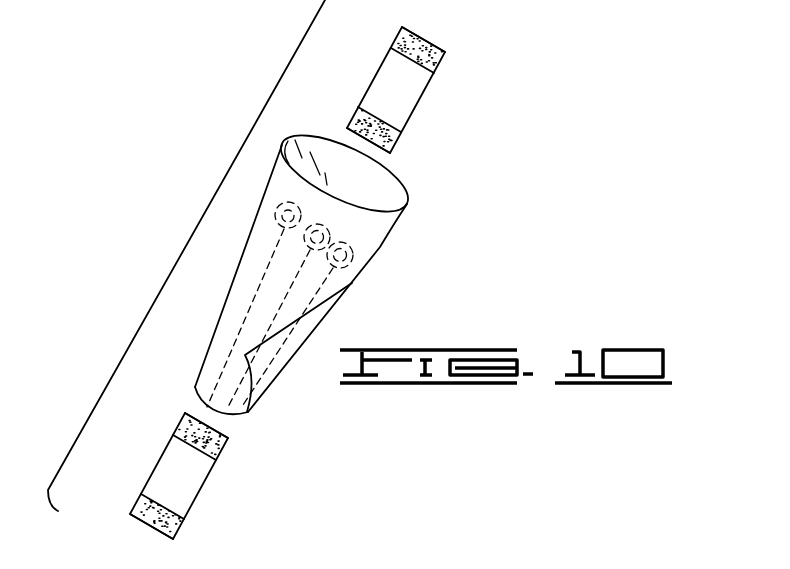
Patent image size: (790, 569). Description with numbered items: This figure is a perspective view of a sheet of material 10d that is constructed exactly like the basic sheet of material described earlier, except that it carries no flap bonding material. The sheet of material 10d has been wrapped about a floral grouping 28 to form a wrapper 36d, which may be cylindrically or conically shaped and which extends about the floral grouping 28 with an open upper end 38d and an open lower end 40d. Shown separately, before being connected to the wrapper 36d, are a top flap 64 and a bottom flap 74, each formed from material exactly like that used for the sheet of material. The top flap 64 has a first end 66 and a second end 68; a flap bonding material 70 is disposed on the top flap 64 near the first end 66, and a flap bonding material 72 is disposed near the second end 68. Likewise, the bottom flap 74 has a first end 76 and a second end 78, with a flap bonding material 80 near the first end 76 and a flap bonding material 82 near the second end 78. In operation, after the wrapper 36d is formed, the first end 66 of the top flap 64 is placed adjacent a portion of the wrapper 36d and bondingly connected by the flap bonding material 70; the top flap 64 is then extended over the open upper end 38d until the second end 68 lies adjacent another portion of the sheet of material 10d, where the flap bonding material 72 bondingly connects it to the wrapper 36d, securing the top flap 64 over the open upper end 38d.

The sheet of material 10d is at (368, 252).
The floral grouping 28 is at (262, 283).
The wrapper 36d is at (346, 292).
The open upper end 38d is at (373, 218).
The open lower end 40d is at (220, 413).
The top flap 64 is at (402, 95).
The first end 66 is at (378, 152).
The second end 68 is at (425, 37).
The flap bonding material 70 is at (385, 126).
The flap bonding material 72 is at (437, 52).
The bottom flap 74 is at (178, 483).
The first end 76 is at (198, 412).
The second end 78 is at (150, 528).
The flap bonding material 80 is at (207, 442).
The flap bonding material 82 is at (167, 523).